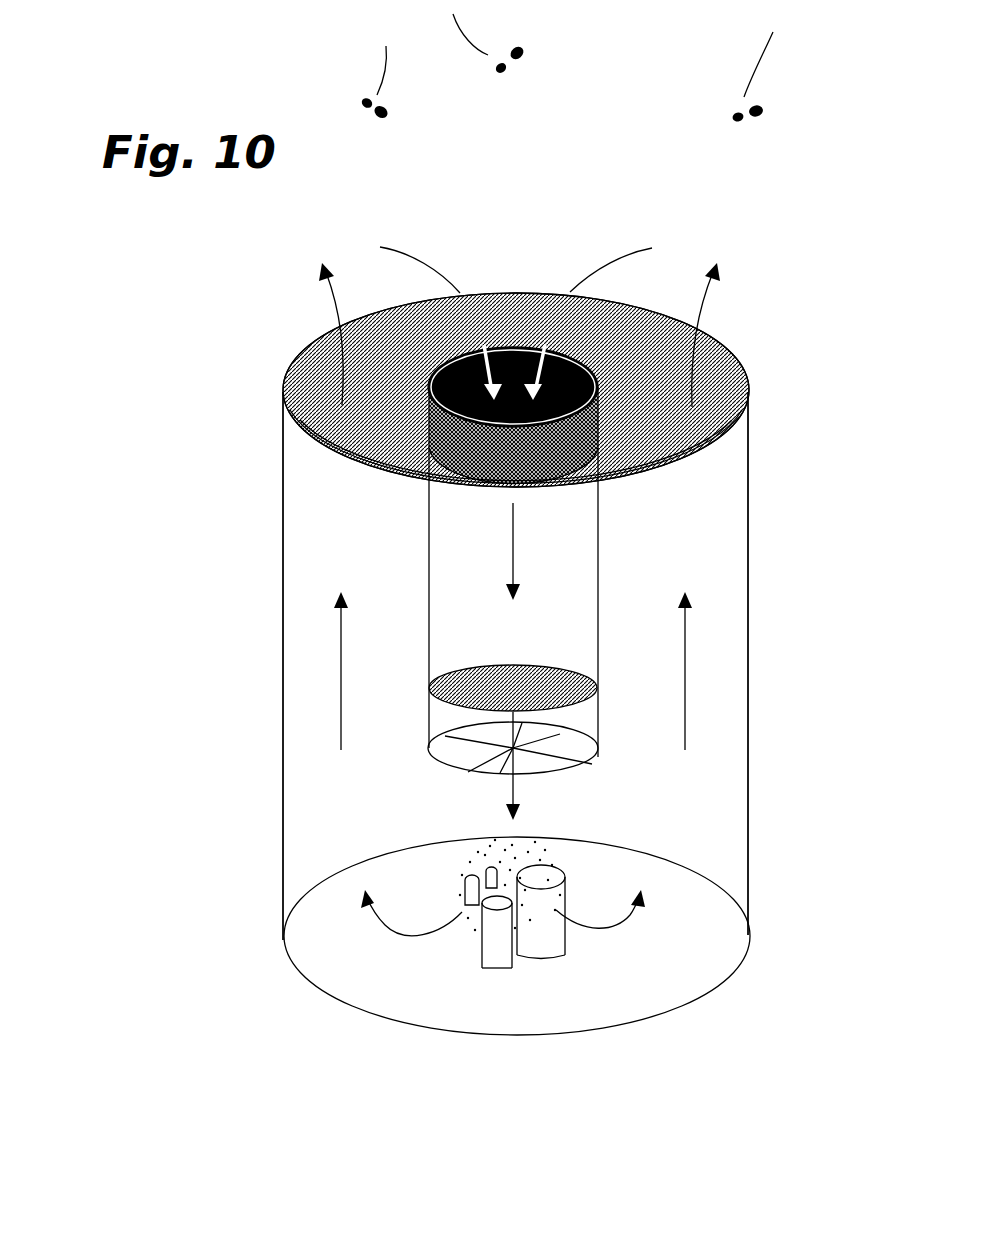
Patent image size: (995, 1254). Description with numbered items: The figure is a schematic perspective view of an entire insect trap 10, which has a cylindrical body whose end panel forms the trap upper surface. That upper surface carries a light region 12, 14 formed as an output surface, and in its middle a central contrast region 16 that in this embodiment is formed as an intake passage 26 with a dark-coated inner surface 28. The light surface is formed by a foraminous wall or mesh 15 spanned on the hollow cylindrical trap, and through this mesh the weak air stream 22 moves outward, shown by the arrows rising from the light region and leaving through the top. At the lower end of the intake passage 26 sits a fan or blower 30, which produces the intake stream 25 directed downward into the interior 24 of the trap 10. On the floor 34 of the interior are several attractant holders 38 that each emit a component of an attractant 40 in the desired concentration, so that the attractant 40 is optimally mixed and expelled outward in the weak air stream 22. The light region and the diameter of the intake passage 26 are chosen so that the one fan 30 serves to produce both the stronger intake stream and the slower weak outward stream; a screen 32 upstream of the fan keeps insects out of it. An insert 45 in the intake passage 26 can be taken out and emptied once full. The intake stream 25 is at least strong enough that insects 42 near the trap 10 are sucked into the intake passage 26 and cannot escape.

The insect trap 10 is at (200, 816).
The light region 12 is at (747, 377).
The top cover 14 is at (747, 377).
The foraminous wall or mesh 15 is at (727, 415).
The central contrast region 16 is at (515, 347).
The weak air stream 22 is at (345, 303).
The outer chamber 24 is at (427, 577).
The intake stream 25 is at (570, 292).
The intake passage 26 is at (427, 577).
The dark-coated inner surface 28 is at (593, 597).
The fan or blower 30 is at (598, 757).
The annular plate 32 is at (695, 433).
The floor 34 is at (345, 980).
The attractant holders 38 is at (497, 953).
The attractant 40 is at (538, 848).
The insects 42 is at (770, 113).
The insert 45 is at (535, 937).